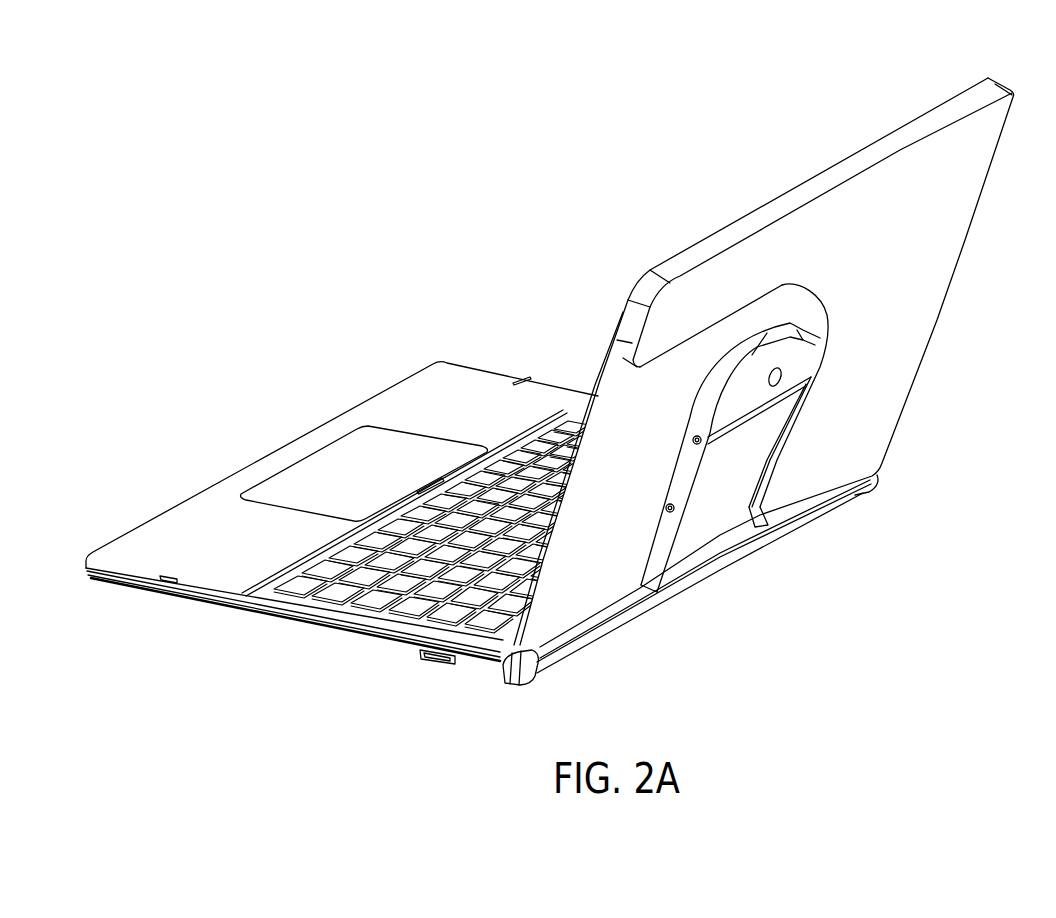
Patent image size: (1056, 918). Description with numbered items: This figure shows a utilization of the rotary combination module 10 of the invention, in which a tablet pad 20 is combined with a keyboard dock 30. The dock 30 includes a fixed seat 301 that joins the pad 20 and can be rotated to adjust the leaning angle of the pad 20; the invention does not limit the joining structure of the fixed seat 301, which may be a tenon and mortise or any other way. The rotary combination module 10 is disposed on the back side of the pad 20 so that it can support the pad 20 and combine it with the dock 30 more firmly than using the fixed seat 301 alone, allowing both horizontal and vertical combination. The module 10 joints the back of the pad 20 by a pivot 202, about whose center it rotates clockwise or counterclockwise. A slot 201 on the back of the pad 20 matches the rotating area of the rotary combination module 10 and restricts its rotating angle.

The rotary combination module 10 is at (771, 322).
The pad 20 is at (912, 130).
The slot 201 is at (712, 345).
The pivot 202 is at (780, 377).
The dock 30 is at (492, 393).
The fixed seat 301 is at (507, 684).